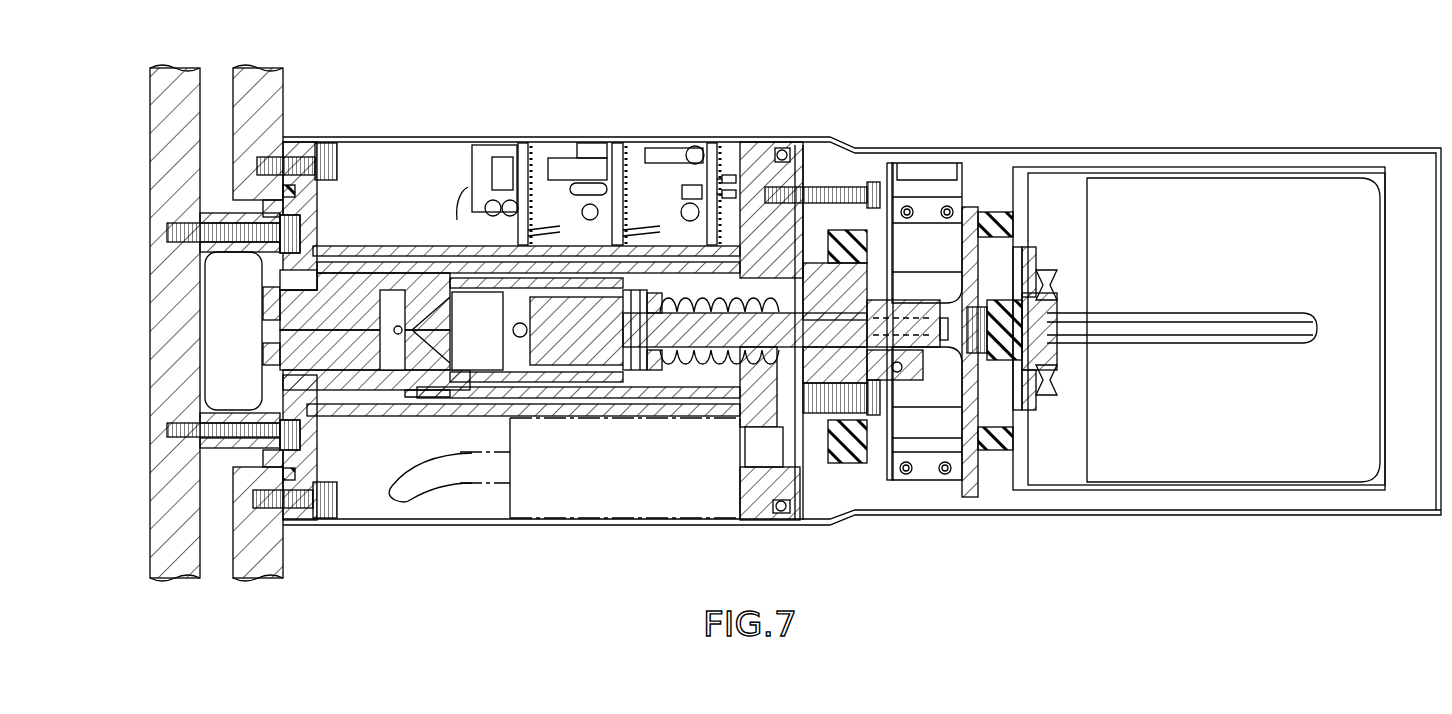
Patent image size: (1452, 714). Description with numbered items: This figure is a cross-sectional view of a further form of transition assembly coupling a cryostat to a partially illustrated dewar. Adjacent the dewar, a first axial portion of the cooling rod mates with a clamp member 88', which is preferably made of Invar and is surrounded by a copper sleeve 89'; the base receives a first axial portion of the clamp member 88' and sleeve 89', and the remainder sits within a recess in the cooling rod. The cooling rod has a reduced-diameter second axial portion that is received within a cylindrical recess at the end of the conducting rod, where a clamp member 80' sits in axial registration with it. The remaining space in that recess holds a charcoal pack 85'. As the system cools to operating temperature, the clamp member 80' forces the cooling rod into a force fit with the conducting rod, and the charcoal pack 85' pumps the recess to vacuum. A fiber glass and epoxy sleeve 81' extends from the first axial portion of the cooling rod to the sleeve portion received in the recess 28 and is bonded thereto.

The copper sleeve 89' is at (365, 268).
The clamp member 88' is at (365, 394).
The charcoal pack 85' is at (462, 287).
The clamp member 80' is at (580, 227).
The fiber glass and epoxy sleeve 81' is at (536, 365).
The base 28 is at (801, 235).